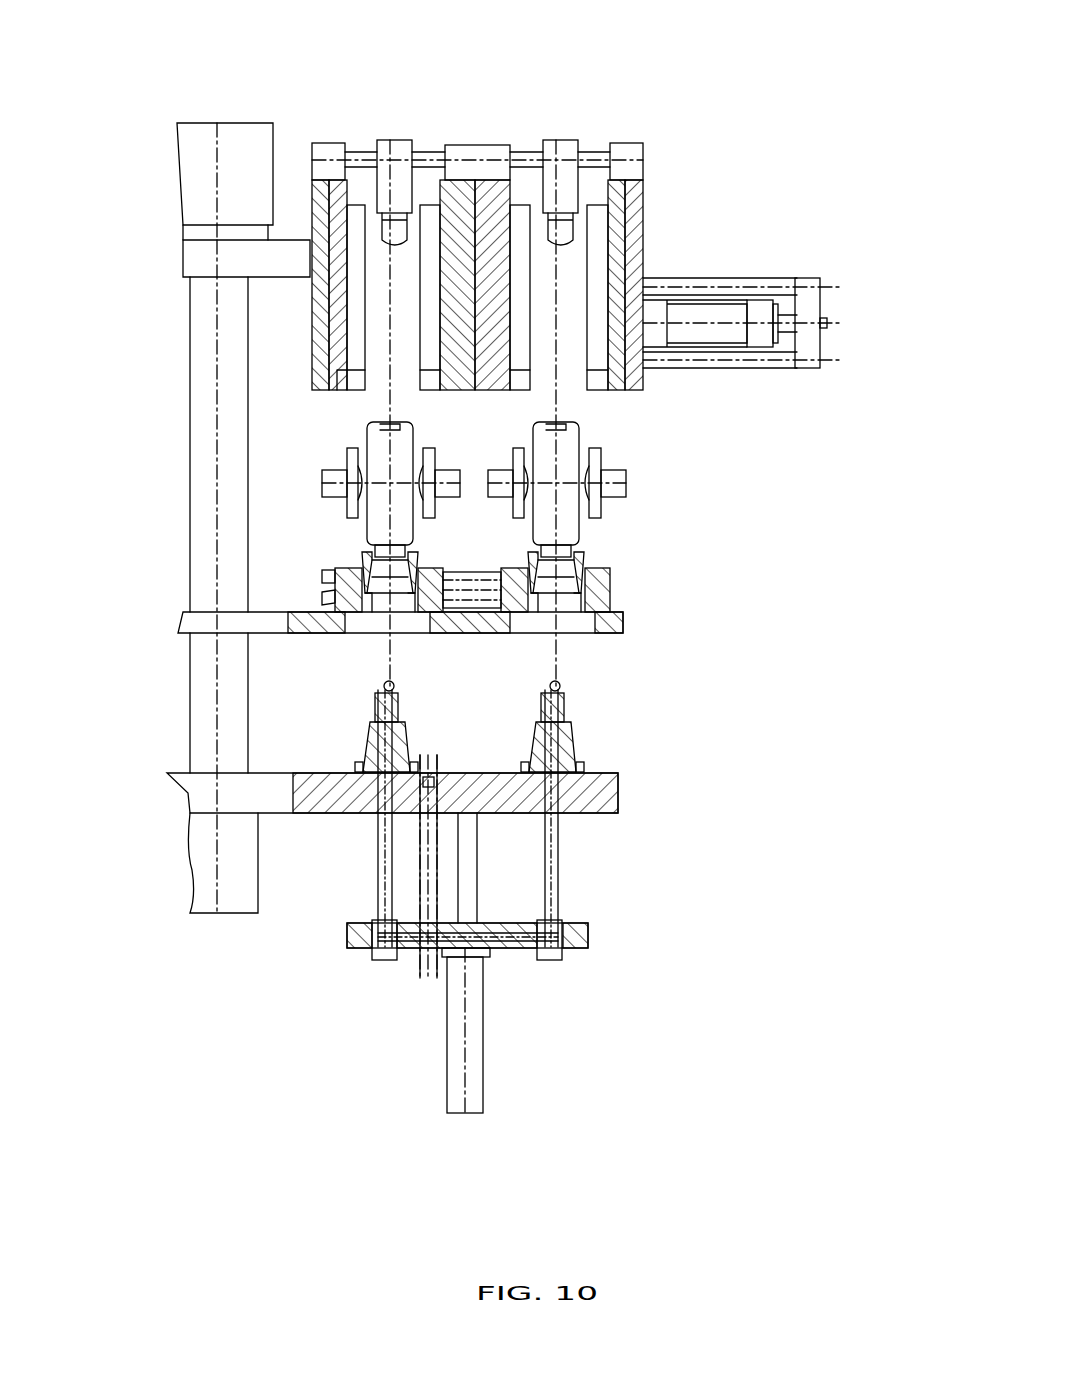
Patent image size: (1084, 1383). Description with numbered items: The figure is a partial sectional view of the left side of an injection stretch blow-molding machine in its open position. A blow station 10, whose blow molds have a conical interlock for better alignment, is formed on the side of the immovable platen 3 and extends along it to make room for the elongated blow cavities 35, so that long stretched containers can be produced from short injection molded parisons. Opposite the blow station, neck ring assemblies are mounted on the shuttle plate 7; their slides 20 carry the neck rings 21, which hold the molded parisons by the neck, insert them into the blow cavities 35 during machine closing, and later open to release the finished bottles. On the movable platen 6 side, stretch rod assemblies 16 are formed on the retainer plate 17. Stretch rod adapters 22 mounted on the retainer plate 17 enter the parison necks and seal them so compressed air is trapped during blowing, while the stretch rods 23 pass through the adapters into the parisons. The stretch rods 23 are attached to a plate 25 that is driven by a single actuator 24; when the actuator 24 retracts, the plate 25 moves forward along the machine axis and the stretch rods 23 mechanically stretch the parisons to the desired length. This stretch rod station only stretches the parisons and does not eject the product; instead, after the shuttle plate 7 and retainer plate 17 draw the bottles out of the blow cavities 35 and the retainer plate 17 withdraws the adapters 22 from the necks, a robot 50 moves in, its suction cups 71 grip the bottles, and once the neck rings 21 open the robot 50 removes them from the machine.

The immovable platen 3 is at (242, 137).
The blow cavities 35 is at (462, 212).
The blow station 10 is at (640, 235).
The robot 50 is at (343, 472).
The suction cups 71 is at (585, 472).
The neck rings 21 is at (577, 553).
The slides 20 is at (602, 582).
The shuttle plate 7 is at (622, 627).
The stretch rod adapters 22 is at (571, 725).
The retainer plate 17 is at (620, 781).
The stretch rods 23 is at (556, 883).
The stretch rod assemblies 16 is at (585, 933).
The plate 25 is at (585, 940).
The movable platen 6 is at (195, 913).
The actuator 24 is at (457, 1100).